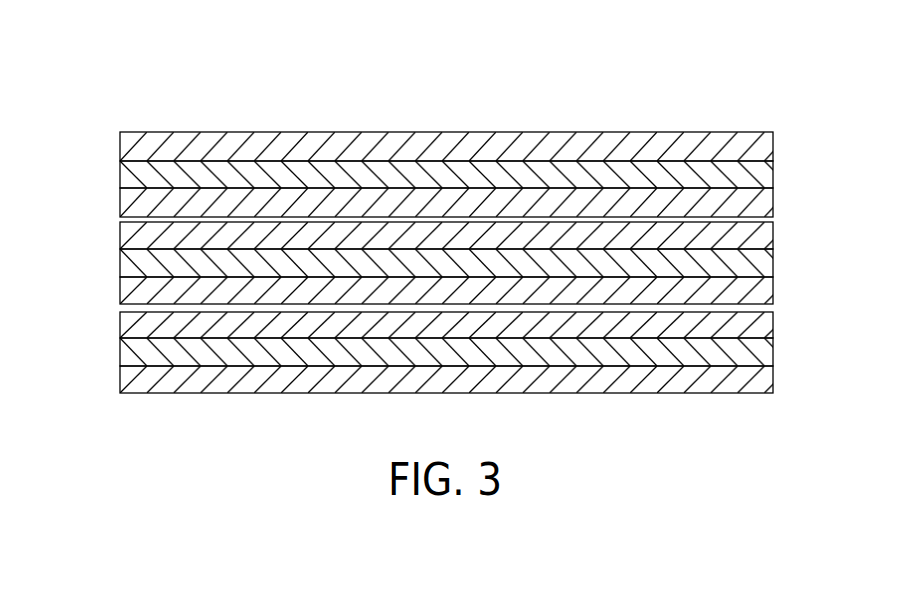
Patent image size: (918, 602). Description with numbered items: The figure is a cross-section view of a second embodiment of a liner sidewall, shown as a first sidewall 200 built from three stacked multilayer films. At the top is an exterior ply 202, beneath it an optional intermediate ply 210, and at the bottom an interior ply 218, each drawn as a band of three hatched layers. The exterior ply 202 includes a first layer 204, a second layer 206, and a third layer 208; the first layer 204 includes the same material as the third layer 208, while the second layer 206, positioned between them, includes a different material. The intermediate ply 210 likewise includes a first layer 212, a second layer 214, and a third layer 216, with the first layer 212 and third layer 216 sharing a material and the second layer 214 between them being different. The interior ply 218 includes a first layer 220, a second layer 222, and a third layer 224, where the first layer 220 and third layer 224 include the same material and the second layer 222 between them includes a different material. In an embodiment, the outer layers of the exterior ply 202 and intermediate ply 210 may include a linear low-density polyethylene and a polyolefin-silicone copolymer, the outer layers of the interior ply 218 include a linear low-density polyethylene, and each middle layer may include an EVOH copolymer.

The first sidewall 200 is at (509, 90).
The exterior ply 202 is at (108, 137).
The first layer 204 is at (762, 148).
The second layer 206 is at (762, 176).
The third layer 208 is at (762, 204).
The intermediate ply 210 is at (108, 223).
The first layer 212 is at (762, 237).
The second layer 214 is at (762, 265).
The third layer 216 is at (762, 294).
The interior ply 218 is at (108, 312).
The first layer 220 is at (762, 326).
The second layer 222 is at (762, 353).
The third layer 224 is at (762, 381).